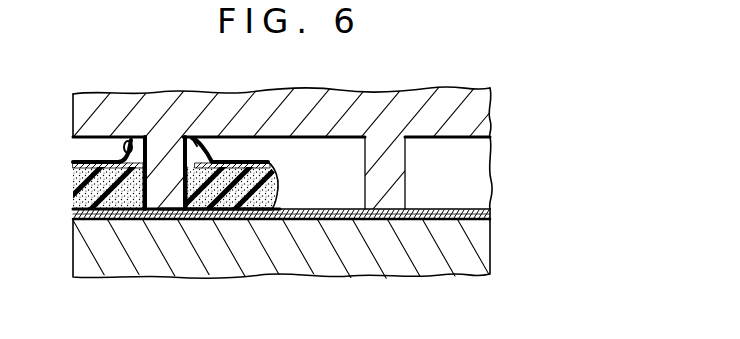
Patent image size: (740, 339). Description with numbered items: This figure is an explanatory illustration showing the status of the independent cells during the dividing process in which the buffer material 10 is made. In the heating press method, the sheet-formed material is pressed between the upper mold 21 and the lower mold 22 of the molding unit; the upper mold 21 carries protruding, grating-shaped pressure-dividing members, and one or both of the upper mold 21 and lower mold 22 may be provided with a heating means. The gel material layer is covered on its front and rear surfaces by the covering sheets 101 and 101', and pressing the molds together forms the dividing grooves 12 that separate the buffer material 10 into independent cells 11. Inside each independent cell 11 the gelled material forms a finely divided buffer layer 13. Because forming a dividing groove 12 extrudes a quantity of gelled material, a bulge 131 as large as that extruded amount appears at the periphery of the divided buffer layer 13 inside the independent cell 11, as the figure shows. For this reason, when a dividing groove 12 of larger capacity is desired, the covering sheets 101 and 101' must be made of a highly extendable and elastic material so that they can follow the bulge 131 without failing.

The buffer material 10 is at (493, 177).
The independent cell 11 is at (461, 159).
The dividing groove 12 is at (152, 212).
The divided buffer layer 13 is at (273, 216).
The upper mold 21 is at (408, 90).
The lower mold 22 is at (490, 254).
The covering sheet 101 is at (177, 128).
The covering sheet 101' is at (220, 269).
The bulge 131 is at (130, 141).